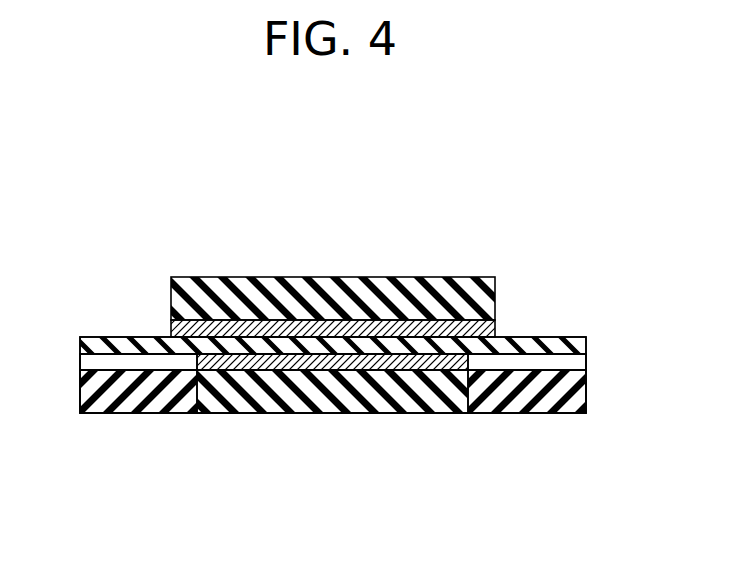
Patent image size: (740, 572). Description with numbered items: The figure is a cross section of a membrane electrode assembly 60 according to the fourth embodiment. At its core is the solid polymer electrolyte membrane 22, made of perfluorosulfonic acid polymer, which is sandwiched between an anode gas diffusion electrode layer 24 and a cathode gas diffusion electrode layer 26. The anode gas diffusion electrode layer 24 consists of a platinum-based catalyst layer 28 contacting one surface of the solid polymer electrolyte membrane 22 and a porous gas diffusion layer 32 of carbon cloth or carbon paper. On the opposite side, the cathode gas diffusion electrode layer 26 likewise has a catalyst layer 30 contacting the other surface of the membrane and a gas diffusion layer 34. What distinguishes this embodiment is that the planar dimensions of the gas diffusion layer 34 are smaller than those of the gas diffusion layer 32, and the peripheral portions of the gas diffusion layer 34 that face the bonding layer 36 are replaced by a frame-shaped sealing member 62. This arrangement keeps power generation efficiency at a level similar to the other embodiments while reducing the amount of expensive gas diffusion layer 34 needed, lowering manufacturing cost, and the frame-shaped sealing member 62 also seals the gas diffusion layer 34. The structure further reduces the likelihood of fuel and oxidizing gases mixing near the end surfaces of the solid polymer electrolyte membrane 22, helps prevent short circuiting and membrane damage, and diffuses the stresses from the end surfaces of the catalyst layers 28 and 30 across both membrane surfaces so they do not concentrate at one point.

The membrane electrode assembly 60 is at (362, 355).
The anode gas diffusion electrode layer 24 is at (284, 256).
The gas diffusion layer 32 is at (320, 278).
The catalyst layer 28 is at (418, 327).
The solid polymer electrolyte membrane 22 is at (100, 346).
The cathode gas diffusion electrode layer 26 is at (227, 449).
The catalyst layer 30 is at (308, 372).
The gas diffusion layer 34 is at (382, 397).
The bonding layer 36 is at (587, 360).
The frame-shaped sealing member 62 is at (98, 407).